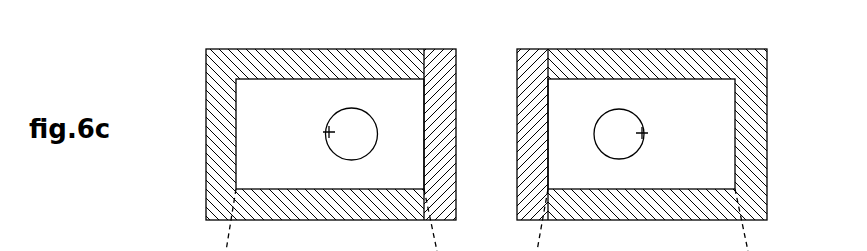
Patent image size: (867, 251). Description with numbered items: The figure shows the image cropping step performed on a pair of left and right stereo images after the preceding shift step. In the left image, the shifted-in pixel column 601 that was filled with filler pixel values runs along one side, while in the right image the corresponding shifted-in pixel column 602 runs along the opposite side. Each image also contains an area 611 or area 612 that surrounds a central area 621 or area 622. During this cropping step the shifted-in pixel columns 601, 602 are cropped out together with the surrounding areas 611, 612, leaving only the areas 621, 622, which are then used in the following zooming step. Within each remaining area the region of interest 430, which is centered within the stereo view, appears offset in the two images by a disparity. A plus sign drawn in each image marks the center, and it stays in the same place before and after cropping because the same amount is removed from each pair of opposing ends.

The shifted-in pixel column 601 is at (441, 55).
The shifted-in pixel column 602 is at (536, 55).
The area surrounding area 611 is at (290, 55).
The area surrounding area 612 is at (637, 55).
The area 621 is at (295, 172).
The area 622 is at (708, 172).
The region of interest 430 is at (341, 112).